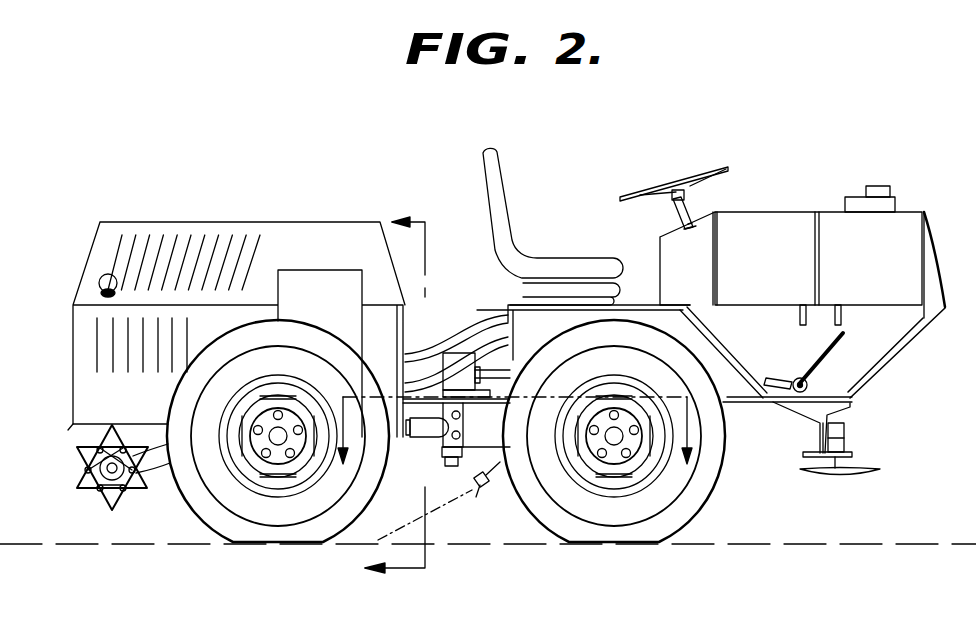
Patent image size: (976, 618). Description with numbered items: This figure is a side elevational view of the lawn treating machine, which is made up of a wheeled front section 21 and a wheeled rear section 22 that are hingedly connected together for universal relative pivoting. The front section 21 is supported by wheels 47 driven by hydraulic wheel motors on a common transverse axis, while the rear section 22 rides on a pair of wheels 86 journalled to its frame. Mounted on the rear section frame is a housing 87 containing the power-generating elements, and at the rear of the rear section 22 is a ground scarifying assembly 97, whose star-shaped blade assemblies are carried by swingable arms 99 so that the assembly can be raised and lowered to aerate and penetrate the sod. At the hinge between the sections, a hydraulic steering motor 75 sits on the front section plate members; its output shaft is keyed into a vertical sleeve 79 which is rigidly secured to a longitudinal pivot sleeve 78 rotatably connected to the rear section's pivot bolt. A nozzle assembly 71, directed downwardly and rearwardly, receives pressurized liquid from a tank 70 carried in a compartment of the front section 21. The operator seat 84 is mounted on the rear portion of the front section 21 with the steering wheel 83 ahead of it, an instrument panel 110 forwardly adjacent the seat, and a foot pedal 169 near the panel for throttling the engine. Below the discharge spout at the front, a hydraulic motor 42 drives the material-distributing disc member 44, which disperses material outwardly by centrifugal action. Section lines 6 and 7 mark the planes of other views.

The housing 87 is at (302, 243).
The wheeled rear section 22 is at (73, 425).
The ground scarifying assembly 97 is at (88, 491).
The swingable arms 99 is at (163, 470).
The wheels 86 is at (353, 513).
The section line 6- 6 is at (508, 419).
The section line 7- 7 is at (406, 404).
The hydraulic steering motor 75 is at (443, 361).
The vertical sleeve 79 is at (463, 424).
The pivot sleeve 78 is at (430, 442).
The nozzle assembly 71 is at (487, 492).
The operator seat 84 is at (480, 165).
The steering wheel 83 is at (726, 168).
The instrument panel 110 is at (666, 228).
The tank 70 is at (893, 203).
The wheeled front section 21 is at (745, 402).
The foot pedal 169 is at (810, 369).
The hydraulic motor 42 is at (850, 438).
The material-distributing disc member 44 is at (884, 473).
The wheels 47 is at (700, 490).